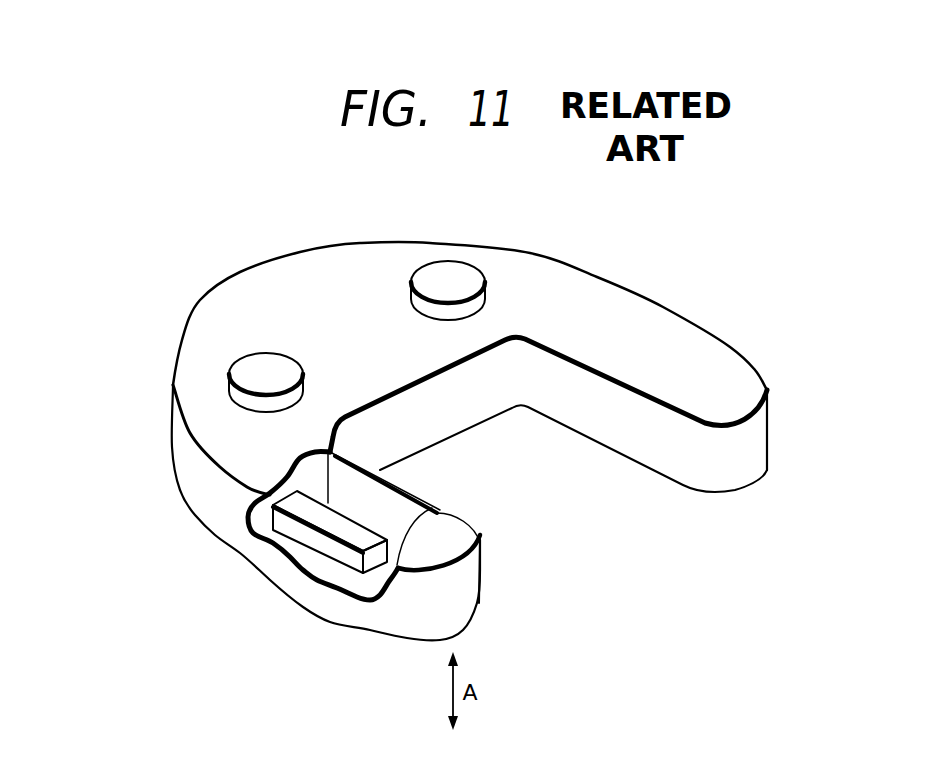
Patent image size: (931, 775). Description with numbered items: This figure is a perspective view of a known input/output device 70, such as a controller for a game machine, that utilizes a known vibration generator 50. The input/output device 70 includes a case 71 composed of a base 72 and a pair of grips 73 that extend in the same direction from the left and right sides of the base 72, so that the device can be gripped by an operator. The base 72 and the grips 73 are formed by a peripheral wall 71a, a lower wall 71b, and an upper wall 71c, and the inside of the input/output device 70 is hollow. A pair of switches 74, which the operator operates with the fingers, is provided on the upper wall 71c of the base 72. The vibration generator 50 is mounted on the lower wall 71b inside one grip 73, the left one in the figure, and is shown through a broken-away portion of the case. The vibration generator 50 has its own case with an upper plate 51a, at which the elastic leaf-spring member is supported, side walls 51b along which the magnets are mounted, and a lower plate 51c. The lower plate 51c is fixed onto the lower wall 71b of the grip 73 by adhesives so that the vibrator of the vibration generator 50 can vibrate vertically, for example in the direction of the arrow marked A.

The input/output device 70 is at (537, 255).
The case 71 is at (247, 323).
The peripheral wall 71a is at (200, 490).
The lower wall 71b is at (377, 588).
The upper wall 71c is at (233, 440).
The base 72 is at (300, 282).
The grip 73 is at (688, 470).
The switch 74 is at (447, 275).
The vibration generator 50 is at (282, 597).
The upper plate 51a is at (330, 520).
The side wall 51b is at (327, 542).
The lower plate 51c is at (343, 565).